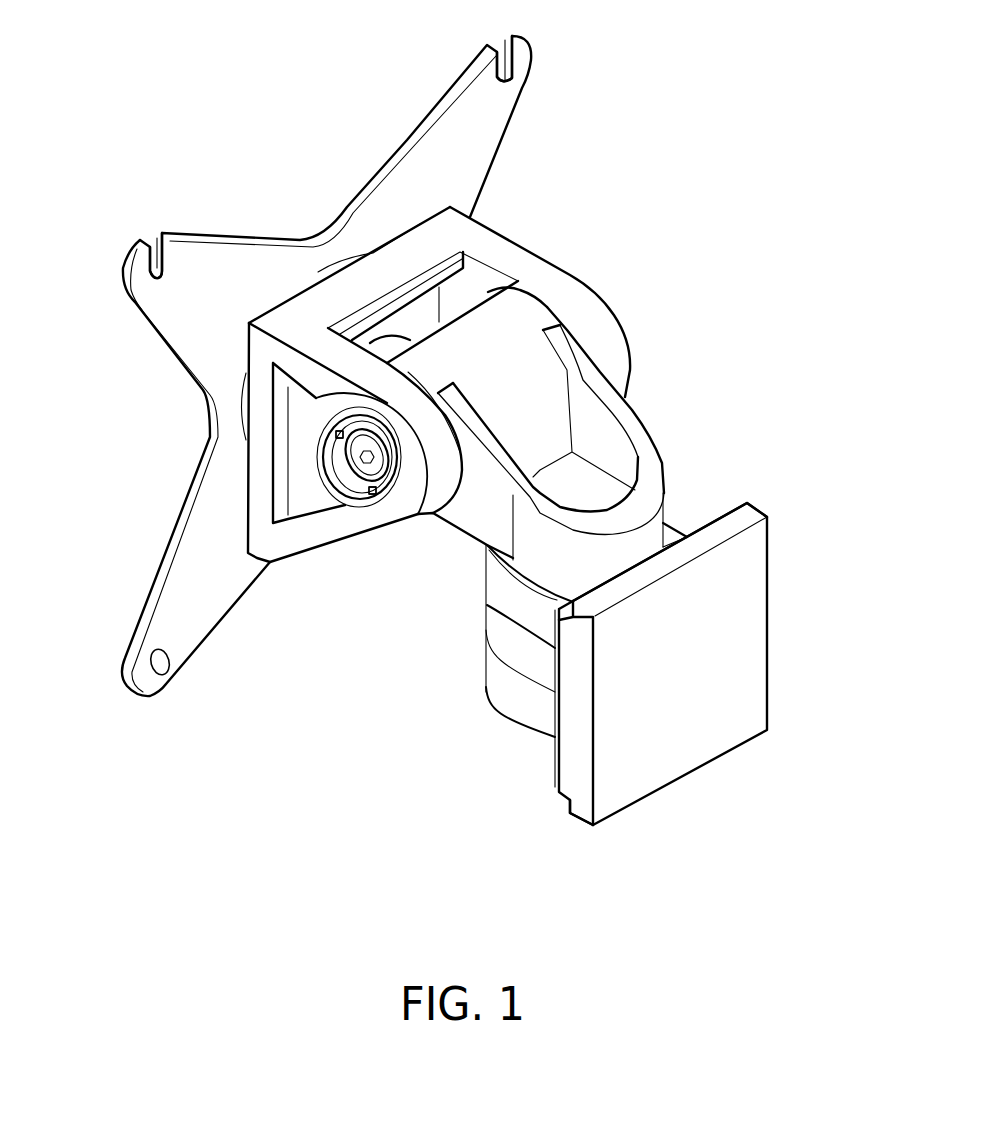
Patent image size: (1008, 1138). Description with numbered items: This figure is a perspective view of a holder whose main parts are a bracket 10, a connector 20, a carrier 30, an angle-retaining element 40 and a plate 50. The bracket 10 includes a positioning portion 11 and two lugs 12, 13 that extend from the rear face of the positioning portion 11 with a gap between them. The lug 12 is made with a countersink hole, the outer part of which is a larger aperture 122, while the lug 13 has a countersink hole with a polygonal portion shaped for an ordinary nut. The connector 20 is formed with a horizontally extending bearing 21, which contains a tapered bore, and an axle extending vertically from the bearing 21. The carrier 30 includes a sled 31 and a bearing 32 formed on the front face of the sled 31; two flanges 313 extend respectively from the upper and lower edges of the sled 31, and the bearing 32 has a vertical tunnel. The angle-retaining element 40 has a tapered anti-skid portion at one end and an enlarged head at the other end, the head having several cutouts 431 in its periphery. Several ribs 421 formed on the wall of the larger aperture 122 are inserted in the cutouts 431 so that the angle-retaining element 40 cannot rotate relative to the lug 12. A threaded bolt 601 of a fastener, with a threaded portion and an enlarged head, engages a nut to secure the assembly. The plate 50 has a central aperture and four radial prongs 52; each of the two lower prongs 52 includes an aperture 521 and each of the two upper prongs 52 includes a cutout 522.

The bracket 10 is at (471, 398).
The positioning portion 11 is at (377, 280).
The lug 12 is at (303, 537).
The lug 13 is at (610, 350).
The connector 20 is at (612, 396).
The bearing 21 is at (528, 322).
The carrier 30 is at (629, 683).
The sled 31 is at (567, 763).
The bearing 32 is at (496, 675).
The flange 313 is at (750, 513).
The angle-retaining element 40 is at (288, 538).
The larger aperture 122 is at (356, 483).
The rib 421 is at (371, 493).
The cutout 431 is at (375, 495).
The threaded bolt 601 is at (353, 459).
The plate 50 is at (376, 397).
The prong 52 is at (190, 255).
The aperture 521 is at (168, 665).
The cutout 522 is at (508, 63).